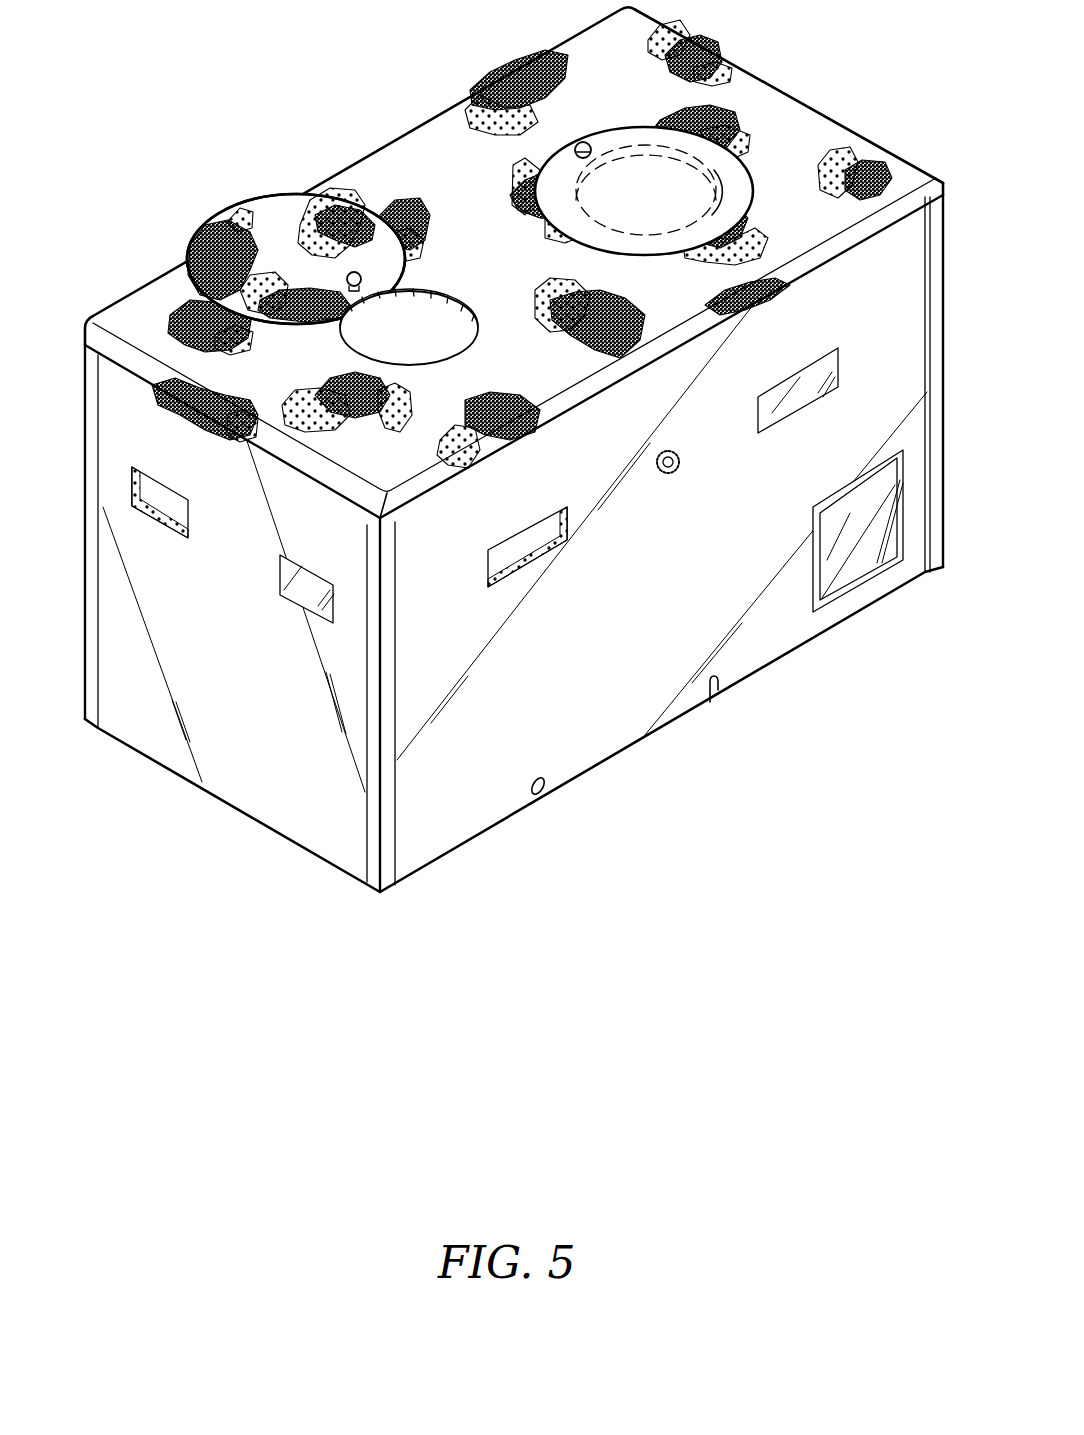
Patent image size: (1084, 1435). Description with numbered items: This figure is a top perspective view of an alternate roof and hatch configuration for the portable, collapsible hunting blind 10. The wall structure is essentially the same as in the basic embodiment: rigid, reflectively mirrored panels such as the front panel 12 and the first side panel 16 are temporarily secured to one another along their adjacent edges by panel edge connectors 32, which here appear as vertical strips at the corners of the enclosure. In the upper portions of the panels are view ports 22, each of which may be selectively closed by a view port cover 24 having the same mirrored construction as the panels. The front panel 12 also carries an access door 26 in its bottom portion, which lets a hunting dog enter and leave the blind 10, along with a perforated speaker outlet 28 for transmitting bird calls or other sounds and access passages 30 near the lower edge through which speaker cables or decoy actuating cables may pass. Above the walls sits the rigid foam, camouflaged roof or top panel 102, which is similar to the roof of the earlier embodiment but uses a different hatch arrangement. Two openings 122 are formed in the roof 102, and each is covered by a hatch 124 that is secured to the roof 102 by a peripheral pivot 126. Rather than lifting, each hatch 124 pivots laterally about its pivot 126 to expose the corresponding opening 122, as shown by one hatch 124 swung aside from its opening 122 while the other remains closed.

The hunting blind 10 is at (676, 842).
The front panel 12 is at (618, 611).
The first side panel 16 is at (198, 647).
The view port 22 is at (150, 491).
The view port cover 24 is at (303, 571).
The access door 26 is at (844, 538).
The perforated speaker outlet 28 is at (696, 463).
The access passage 30 is at (545, 797).
The panel edge connector 32 is at (85, 725).
The roof or top panel 102 is at (449, 258).
The opening 122 is at (383, 338).
The hatch 124 is at (352, 198).
The peripheral pivot 126 is at (346, 301).